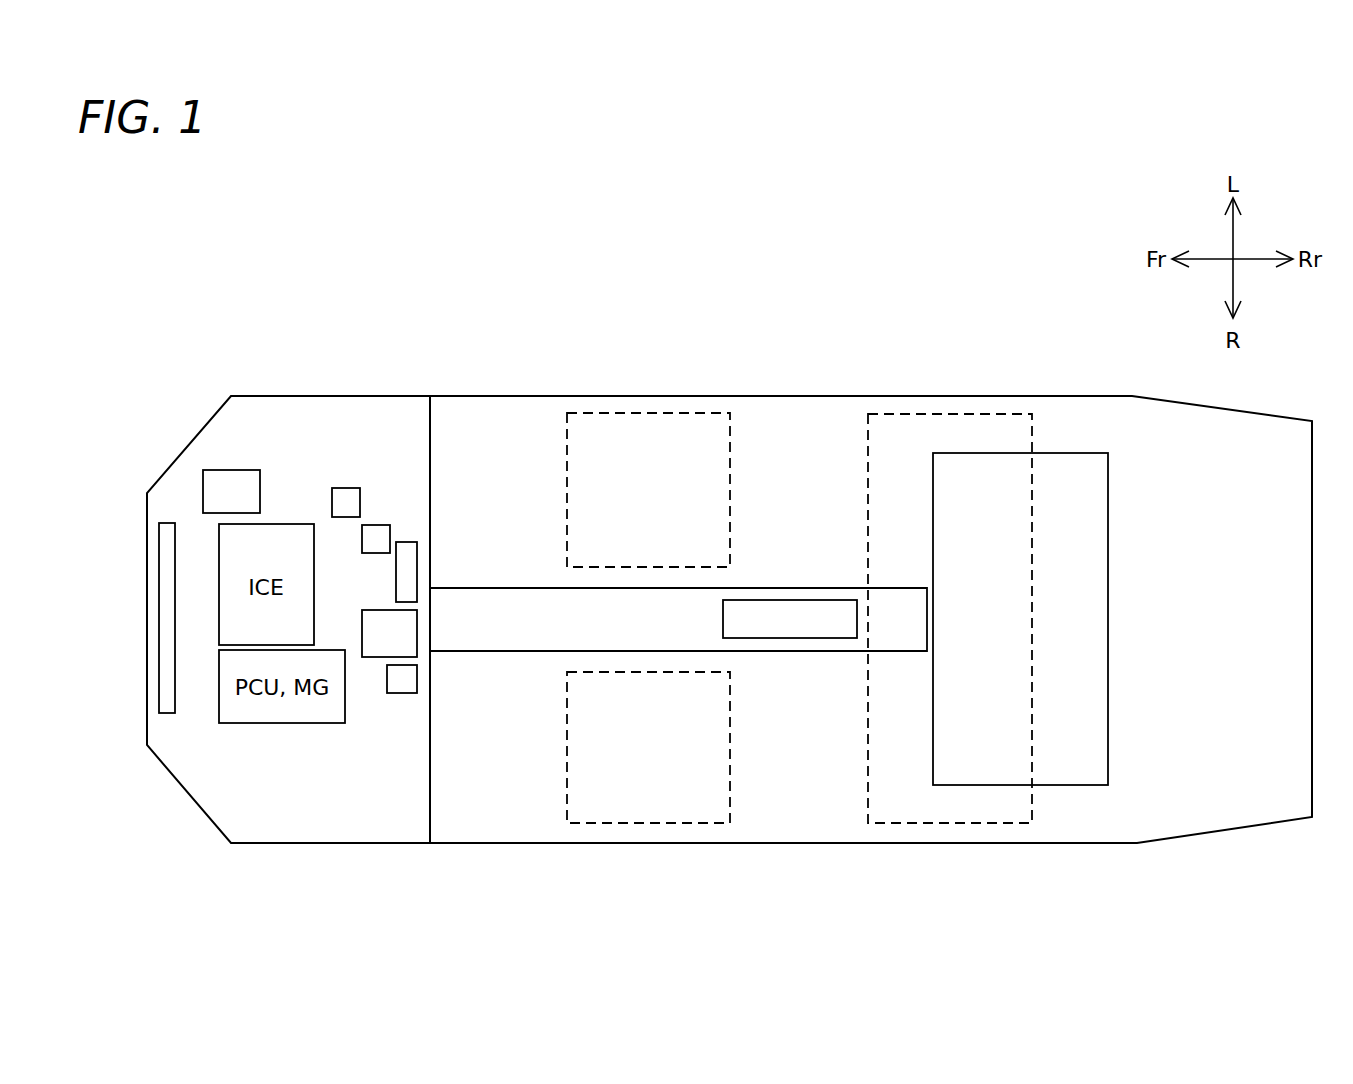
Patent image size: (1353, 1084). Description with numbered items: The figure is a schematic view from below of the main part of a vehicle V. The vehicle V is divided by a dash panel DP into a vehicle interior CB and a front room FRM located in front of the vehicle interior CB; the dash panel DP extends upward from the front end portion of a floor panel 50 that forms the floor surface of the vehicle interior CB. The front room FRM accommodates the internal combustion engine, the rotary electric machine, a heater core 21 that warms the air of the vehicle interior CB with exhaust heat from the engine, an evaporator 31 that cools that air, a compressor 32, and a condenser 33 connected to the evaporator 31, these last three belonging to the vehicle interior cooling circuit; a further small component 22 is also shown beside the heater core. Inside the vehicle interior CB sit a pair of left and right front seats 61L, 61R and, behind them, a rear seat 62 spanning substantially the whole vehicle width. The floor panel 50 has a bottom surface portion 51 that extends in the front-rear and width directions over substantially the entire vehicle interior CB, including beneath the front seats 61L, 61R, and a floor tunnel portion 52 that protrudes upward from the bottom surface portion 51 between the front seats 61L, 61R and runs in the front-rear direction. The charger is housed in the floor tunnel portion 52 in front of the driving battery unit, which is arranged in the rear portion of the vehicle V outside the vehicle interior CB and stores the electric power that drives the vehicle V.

The vehicle V is at (270, 314).
The front room FRM is at (350, 420).
The dash panel DP is at (430, 460).
The vehicle interior CB is at (517, 455).
The heater core 21 is at (388, 633).
The second electric component 22 is at (403, 680).
The evaporator 31 is at (409, 555).
The compressor 32 is at (229, 488).
The condenser 33 is at (167, 612).
The floor panel 50 is at (889, 396).
The bottom surface portion 51 is at (793, 453).
The floor tunnel portion 52 is at (513, 640).
The left front seat 61L is at (640, 413).
The right front seat 61R is at (668, 825).
The rear seat 62 is at (955, 828).